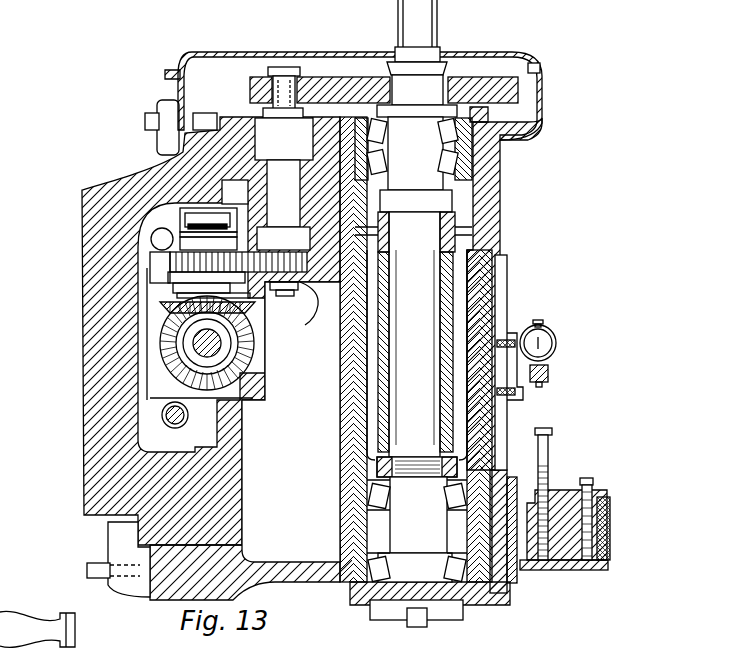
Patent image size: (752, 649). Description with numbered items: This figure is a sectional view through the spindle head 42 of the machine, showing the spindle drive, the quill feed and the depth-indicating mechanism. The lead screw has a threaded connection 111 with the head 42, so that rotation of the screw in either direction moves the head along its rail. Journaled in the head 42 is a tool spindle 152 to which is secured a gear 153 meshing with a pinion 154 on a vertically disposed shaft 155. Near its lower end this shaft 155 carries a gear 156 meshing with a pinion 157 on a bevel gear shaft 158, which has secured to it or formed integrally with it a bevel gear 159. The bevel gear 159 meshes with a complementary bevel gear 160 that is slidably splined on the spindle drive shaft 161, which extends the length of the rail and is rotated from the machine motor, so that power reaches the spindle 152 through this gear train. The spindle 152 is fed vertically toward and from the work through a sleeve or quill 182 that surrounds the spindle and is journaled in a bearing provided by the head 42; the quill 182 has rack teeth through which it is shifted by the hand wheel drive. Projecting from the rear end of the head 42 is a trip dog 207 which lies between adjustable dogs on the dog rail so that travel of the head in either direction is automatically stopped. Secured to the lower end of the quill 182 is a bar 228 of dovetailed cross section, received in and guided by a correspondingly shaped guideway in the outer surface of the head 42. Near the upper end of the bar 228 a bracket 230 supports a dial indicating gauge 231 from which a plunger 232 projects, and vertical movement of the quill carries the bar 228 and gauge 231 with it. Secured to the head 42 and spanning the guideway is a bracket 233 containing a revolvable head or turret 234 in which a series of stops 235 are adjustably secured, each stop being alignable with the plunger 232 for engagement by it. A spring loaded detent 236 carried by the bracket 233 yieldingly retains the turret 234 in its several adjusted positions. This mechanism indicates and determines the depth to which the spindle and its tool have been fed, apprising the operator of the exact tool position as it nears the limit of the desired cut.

The head 42 is at (500, 168).
The threaded connection 111 is at (192, 420).
The tool spindle 152 is at (420, 258).
The gear 153 is at (492, 78).
The pinion 154 is at (250, 77).
The vertically disposed shaft 155 is at (296, 290).
The gear 156 is at (308, 308).
The pinion 157 is at (165, 262).
The bevel gear shaft 158 is at (207, 223).
The bevel gear 159 is at (245, 315).
The bevel gear 160 is at (168, 345).
The spindle drive shaft 161 is at (178, 362).
The quill 182 is at (480, 306).
The trip dog 207 is at (95, 568).
The bar 228 is at (500, 428).
The bracket 230 is at (550, 372).
The dial indicating gauge 231 is at (558, 332).
The plunger 232 is at (542, 387).
The bracket 233 is at (520, 570).
The turret 234 is at (565, 490).
The stops 235 is at (548, 462).
The spring loaded detent 236 is at (610, 503).